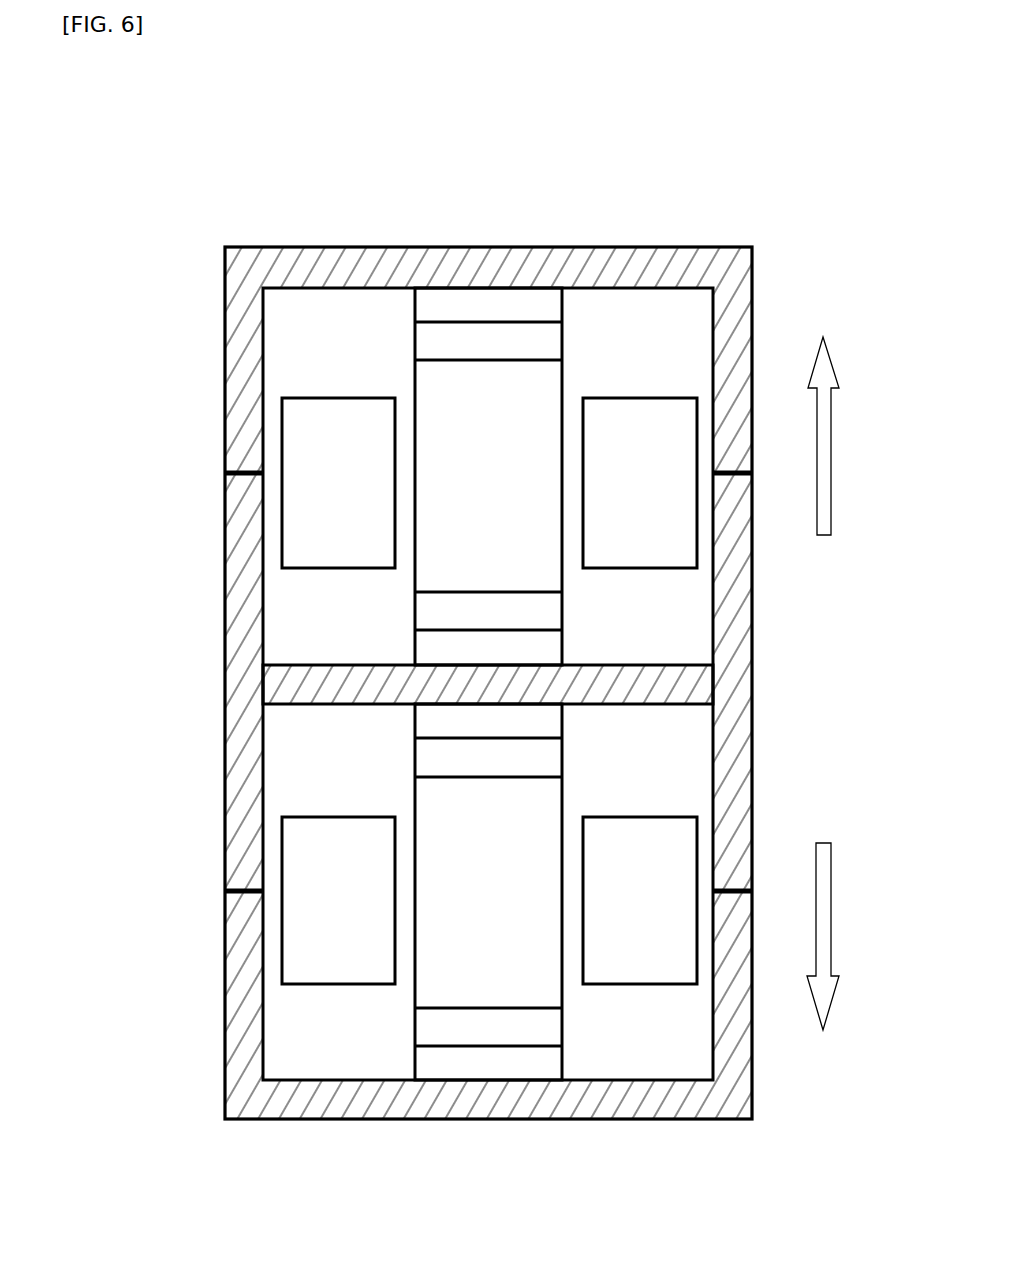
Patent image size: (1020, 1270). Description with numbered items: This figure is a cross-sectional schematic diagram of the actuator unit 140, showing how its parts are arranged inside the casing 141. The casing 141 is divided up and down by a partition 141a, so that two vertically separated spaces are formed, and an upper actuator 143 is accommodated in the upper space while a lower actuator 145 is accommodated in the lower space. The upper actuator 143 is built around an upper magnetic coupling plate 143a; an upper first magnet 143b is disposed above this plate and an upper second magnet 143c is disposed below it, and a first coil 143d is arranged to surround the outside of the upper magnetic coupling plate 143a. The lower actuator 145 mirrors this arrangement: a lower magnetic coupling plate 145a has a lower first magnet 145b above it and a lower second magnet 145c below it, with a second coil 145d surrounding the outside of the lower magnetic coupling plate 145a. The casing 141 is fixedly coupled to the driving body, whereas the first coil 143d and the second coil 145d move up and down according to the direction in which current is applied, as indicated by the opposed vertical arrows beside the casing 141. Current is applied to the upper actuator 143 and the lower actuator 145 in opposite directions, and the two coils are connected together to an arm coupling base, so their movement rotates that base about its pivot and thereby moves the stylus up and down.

The actuator unit 140 is at (181, 152).
The casing 141 is at (477, 247).
The partition 141a is at (280, 682).
The upper actuator 143 is at (168, 291).
The upper magnetic coupling plate 143a is at (533, 557).
The upper first magnet 143b is at (420, 302).
The upper second magnet 143c is at (553, 612).
The first coil 143d is at (300, 428).
The lower actuator 145 is at (168, 808).
The lower magnetic coupling plate 145a is at (533, 812).
The lower first magnet 145b is at (553, 718).
The lower second magnet 145c is at (420, 1024).
The second coil 145d is at (300, 940).